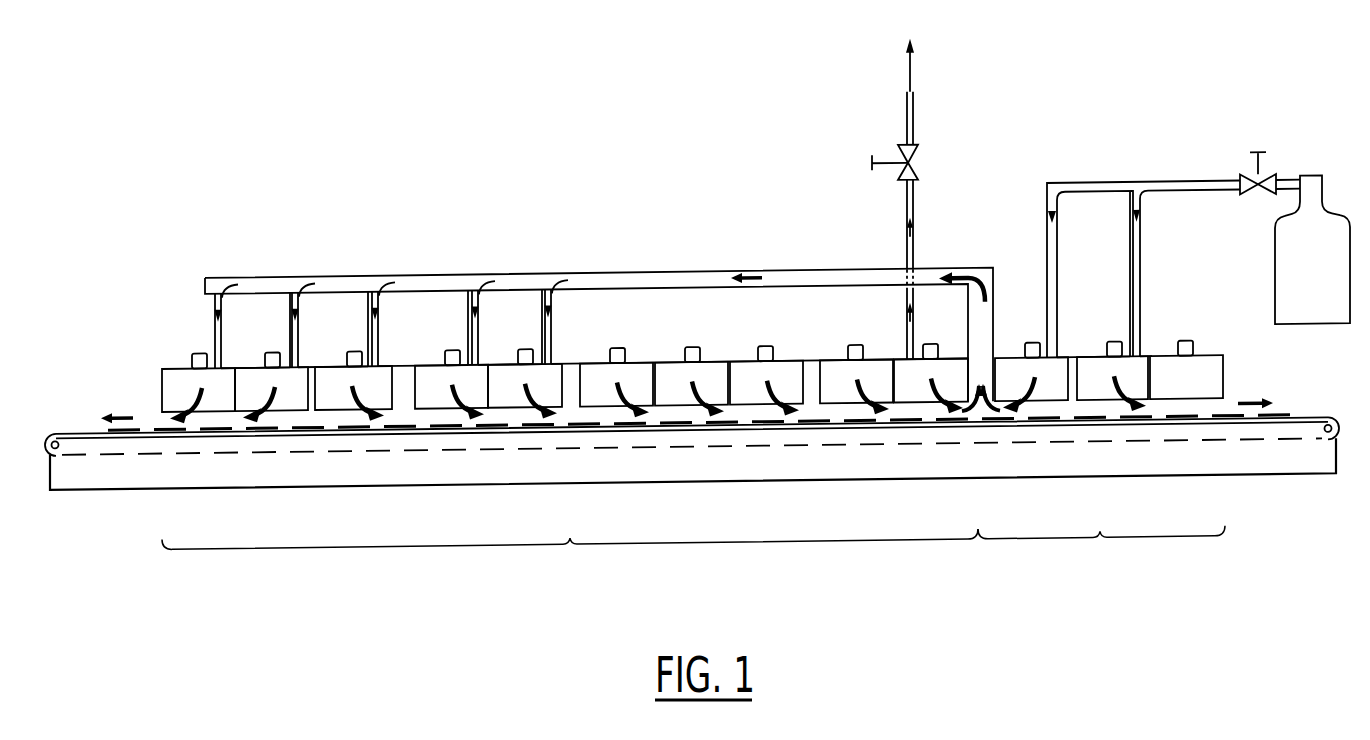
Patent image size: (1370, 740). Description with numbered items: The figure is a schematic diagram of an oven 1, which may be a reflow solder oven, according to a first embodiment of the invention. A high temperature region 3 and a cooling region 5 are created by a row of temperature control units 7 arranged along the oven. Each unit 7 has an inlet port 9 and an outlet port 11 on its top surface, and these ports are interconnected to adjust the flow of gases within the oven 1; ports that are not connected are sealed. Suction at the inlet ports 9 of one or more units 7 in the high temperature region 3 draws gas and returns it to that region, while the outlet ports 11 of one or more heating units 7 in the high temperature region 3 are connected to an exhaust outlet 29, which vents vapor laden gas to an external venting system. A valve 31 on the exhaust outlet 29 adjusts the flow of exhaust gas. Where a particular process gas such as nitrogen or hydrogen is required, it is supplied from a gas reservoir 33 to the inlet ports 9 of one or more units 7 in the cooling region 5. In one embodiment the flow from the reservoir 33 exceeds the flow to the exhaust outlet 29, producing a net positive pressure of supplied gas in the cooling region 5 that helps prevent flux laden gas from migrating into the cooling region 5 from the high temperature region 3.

The oven 1 is at (170, 296).
The high temperature region 3 is at (570, 559).
The cooling region 5 is at (1101, 553).
The temperature control unit 7 is at (692, 381).
The inlet port 9 is at (226, 366).
The outlet port 11 is at (905, 366).
The exhaust outlet 29 is at (914, 221).
The valve 31 is at (916, 167).
The gas reservoir 33 is at (1295, 237).